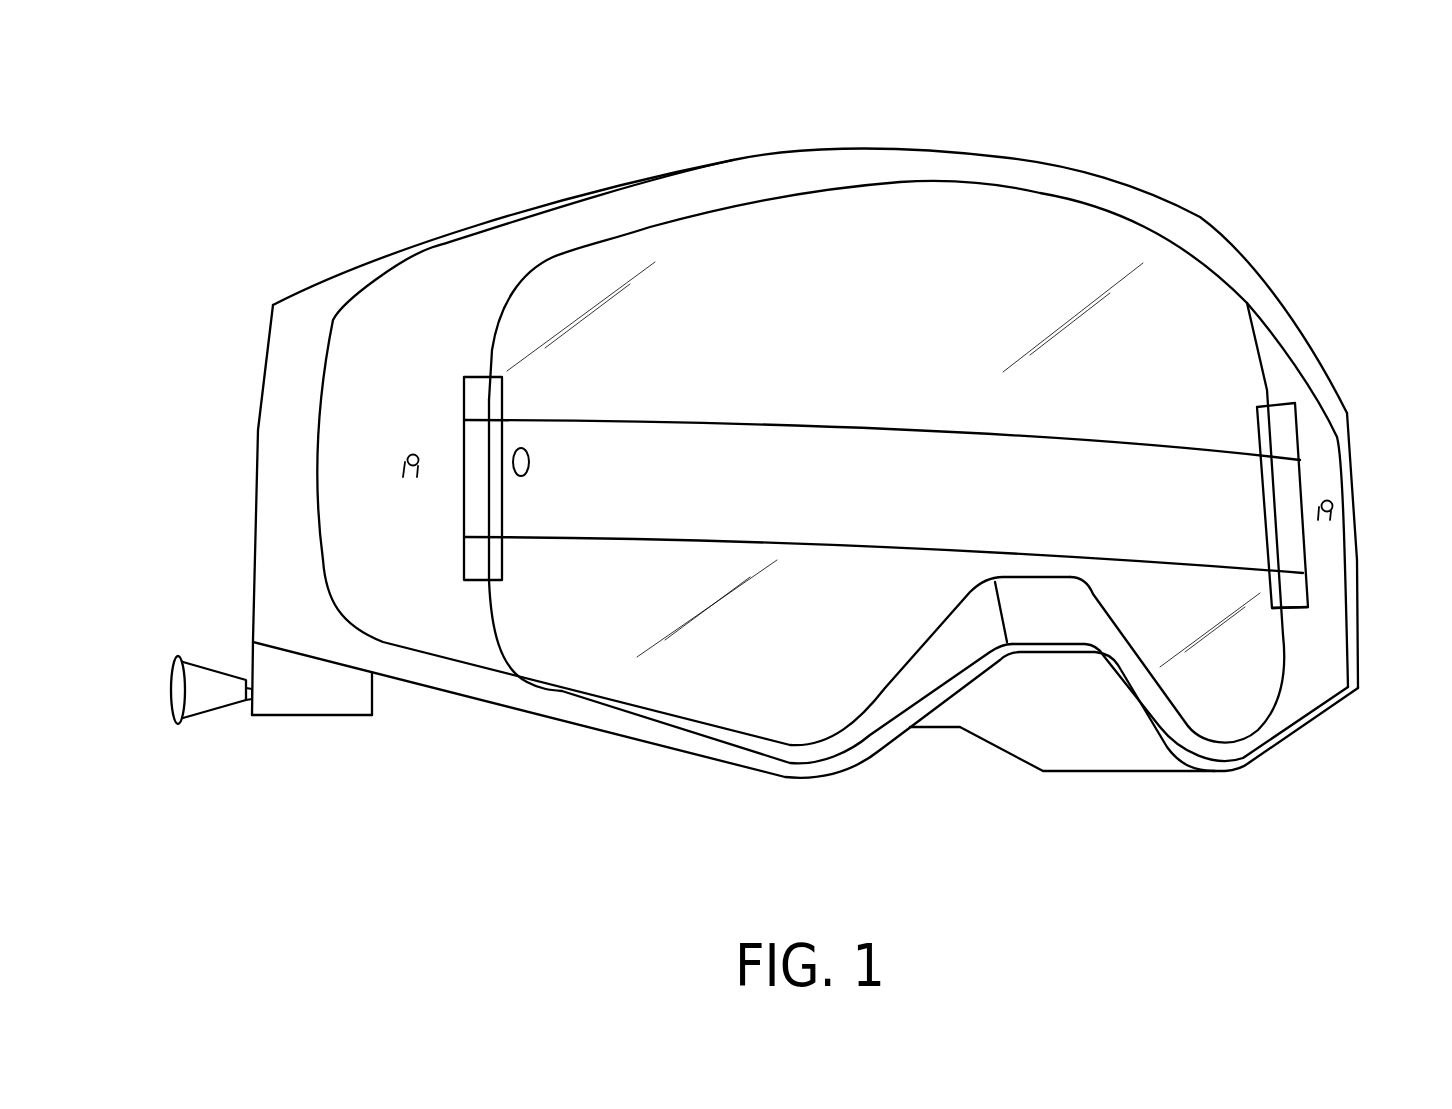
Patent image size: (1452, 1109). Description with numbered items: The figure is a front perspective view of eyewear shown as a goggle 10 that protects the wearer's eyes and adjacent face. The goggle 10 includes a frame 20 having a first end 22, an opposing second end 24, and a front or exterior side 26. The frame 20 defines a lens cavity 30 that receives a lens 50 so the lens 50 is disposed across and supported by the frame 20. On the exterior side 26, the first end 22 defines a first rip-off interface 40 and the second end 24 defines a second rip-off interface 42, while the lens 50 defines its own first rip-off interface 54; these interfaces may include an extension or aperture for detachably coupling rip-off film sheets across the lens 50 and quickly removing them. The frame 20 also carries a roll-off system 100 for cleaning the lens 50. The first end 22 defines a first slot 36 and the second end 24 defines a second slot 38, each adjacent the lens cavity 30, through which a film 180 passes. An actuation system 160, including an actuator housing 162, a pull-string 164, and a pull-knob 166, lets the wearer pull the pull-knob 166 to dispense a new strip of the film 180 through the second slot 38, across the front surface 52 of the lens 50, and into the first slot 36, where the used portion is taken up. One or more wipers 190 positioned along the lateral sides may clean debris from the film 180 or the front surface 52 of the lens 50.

The goggle 10 is at (190, 173).
The frame 20 is at (518, 211).
The first end 22 is at (218, 426).
The second end 24 is at (1372, 439).
The exterior side 26 is at (1133, 802).
The lens cavity 30 is at (772, 741).
The first slot 36 is at (475, 583).
The second slot 38 is at (1295, 583).
The first rip-off interface 40 is at (407, 458).
The second rip-off interface 42 is at (1333, 512).
The lens 50 is at (1221, 704).
The front surface 52 is at (673, 668).
The first rip-off interface 54 is at (527, 477).
The roll-off system 100 is at (263, 749).
The actuation system 160 is at (343, 733).
The actuator housing 162 is at (360, 708).
The pull-string 164 is at (247, 695).
The pull-knob 166 is at (200, 668).
The film 180 is at (617, 453).
The wipers 190 is at (491, 583).